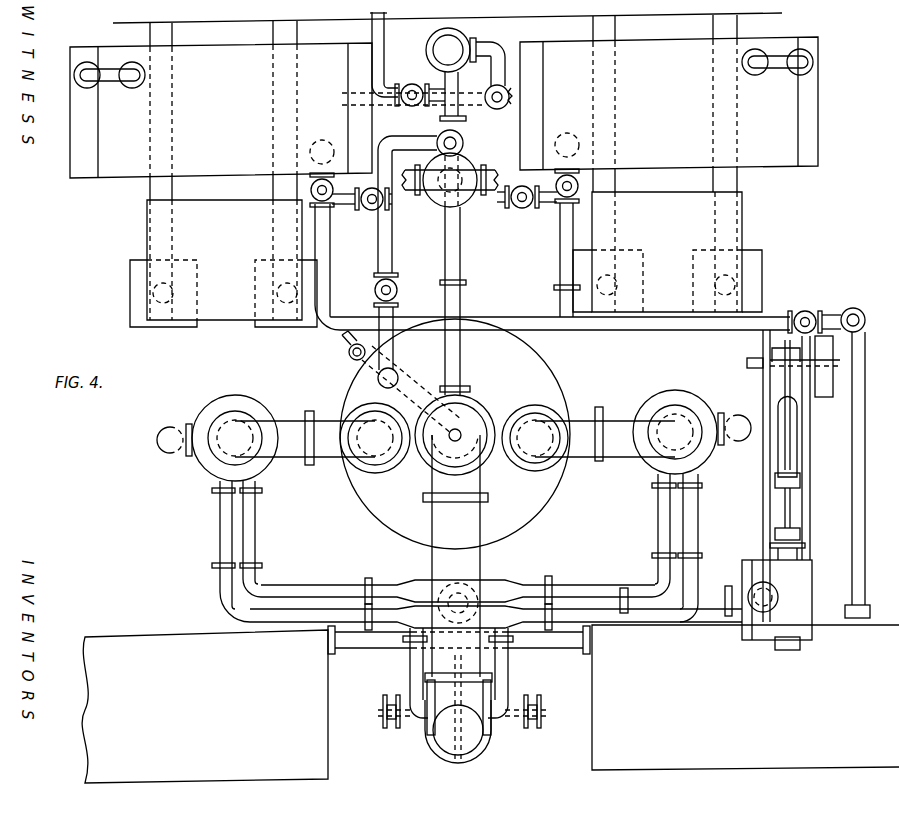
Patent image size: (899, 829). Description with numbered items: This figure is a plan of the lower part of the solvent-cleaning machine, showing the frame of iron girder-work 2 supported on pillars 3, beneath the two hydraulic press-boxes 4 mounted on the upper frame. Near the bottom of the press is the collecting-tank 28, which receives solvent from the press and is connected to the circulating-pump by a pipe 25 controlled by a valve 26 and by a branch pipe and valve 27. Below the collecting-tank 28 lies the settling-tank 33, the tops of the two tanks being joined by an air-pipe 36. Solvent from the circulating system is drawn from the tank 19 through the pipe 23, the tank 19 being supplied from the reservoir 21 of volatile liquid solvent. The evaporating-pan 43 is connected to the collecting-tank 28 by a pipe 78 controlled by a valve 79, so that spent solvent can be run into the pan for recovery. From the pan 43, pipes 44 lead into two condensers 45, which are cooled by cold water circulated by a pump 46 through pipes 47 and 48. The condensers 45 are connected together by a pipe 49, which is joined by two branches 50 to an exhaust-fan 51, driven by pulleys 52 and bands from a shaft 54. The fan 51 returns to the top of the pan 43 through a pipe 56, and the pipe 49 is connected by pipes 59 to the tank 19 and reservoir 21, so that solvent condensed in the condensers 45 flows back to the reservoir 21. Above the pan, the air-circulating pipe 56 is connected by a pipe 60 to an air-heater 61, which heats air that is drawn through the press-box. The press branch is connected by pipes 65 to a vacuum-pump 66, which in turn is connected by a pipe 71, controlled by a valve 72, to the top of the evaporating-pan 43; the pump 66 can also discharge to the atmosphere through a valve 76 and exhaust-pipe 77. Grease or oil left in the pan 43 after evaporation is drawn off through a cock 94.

The iron girder-work 2 is at (443, 167).
The pillars 3 is at (130, 273).
The hydraulic press-boxes 4 is at (444, 256).
The tank 19 is at (745, 697).
The reservoir 21 is at (205, 706).
The pipe 23 is at (858, 440).
The pipe 25 is at (336, 330).
The valve 26 is at (804, 310).
The branch pipe and valve 27 is at (332, 205).
The collecting-tank 28 is at (444, 107).
The settling-tank 33 is at (447, 107).
The air-pipe 36 is at (443, 63).
The evaporating-pan 43 is at (455, 434).
The pipes 44 is at (455, 436).
The condensers 45 is at (692, 403).
The pump 46 is at (806, 598).
The pipes 47 is at (249, 513).
The pipes 48 is at (452, 440).
The pipe 49 is at (255, 548).
The branches 50 is at (412, 676).
The exhaust-fan 51 is at (472, 752).
The pulleys 52 is at (383, 712).
The shaft 54 is at (235, 435).
The pipe 56 is at (457, 558).
The pipes 59 is at (356, 650).
The pipe 60 is at (460, 267).
The air-heater 61 is at (470, 167).
The pipes 65 is at (477, 46).
The vacuum-pump 66 is at (448, 50).
The pipe 71 is at (450, 83).
The valve 72 is at (396, 290).
The valve 76 is at (420, 85).
The exhaust-pipe 77 is at (378, 58).
The pipe 78 is at (318, 148).
The valve 79 is at (367, 211).
The cock 94 is at (349, 354).